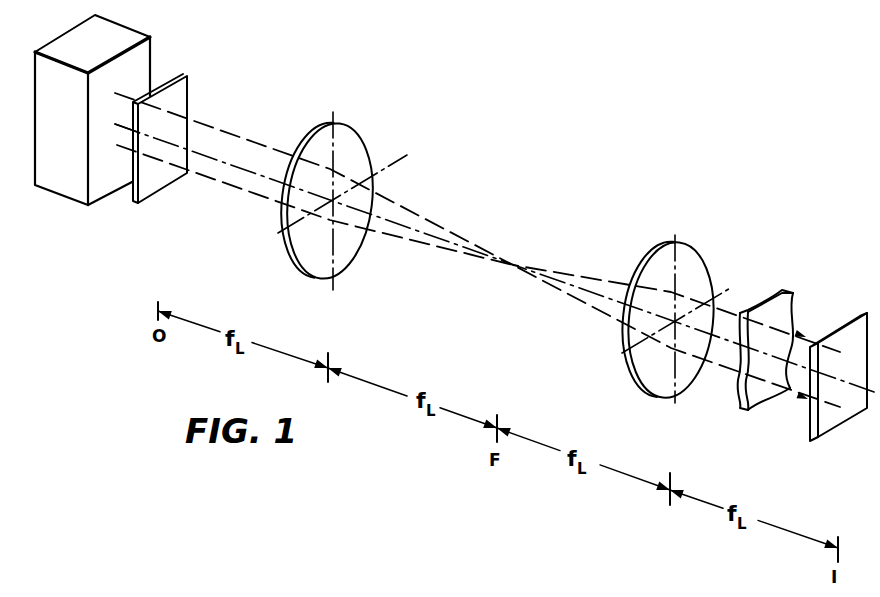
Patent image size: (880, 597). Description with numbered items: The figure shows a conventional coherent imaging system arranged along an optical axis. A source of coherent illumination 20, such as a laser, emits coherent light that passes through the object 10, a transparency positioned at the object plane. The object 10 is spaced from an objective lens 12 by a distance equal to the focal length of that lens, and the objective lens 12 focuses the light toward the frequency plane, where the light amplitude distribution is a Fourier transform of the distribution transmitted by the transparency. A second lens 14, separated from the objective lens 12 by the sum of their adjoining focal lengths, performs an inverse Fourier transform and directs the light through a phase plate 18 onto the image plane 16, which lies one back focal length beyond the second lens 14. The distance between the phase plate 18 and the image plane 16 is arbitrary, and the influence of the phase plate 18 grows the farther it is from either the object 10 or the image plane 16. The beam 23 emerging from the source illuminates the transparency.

The object 10 is at (132, 188).
The objective lens 12 is at (355, 147).
The second lens 14 is at (688, 255).
The image plane 16 is at (845, 333).
The phase plate 18 is at (763, 298).
The source of coherent illumination 20 is at (152, 58).
The collimated light beam 23 is at (119, 128).